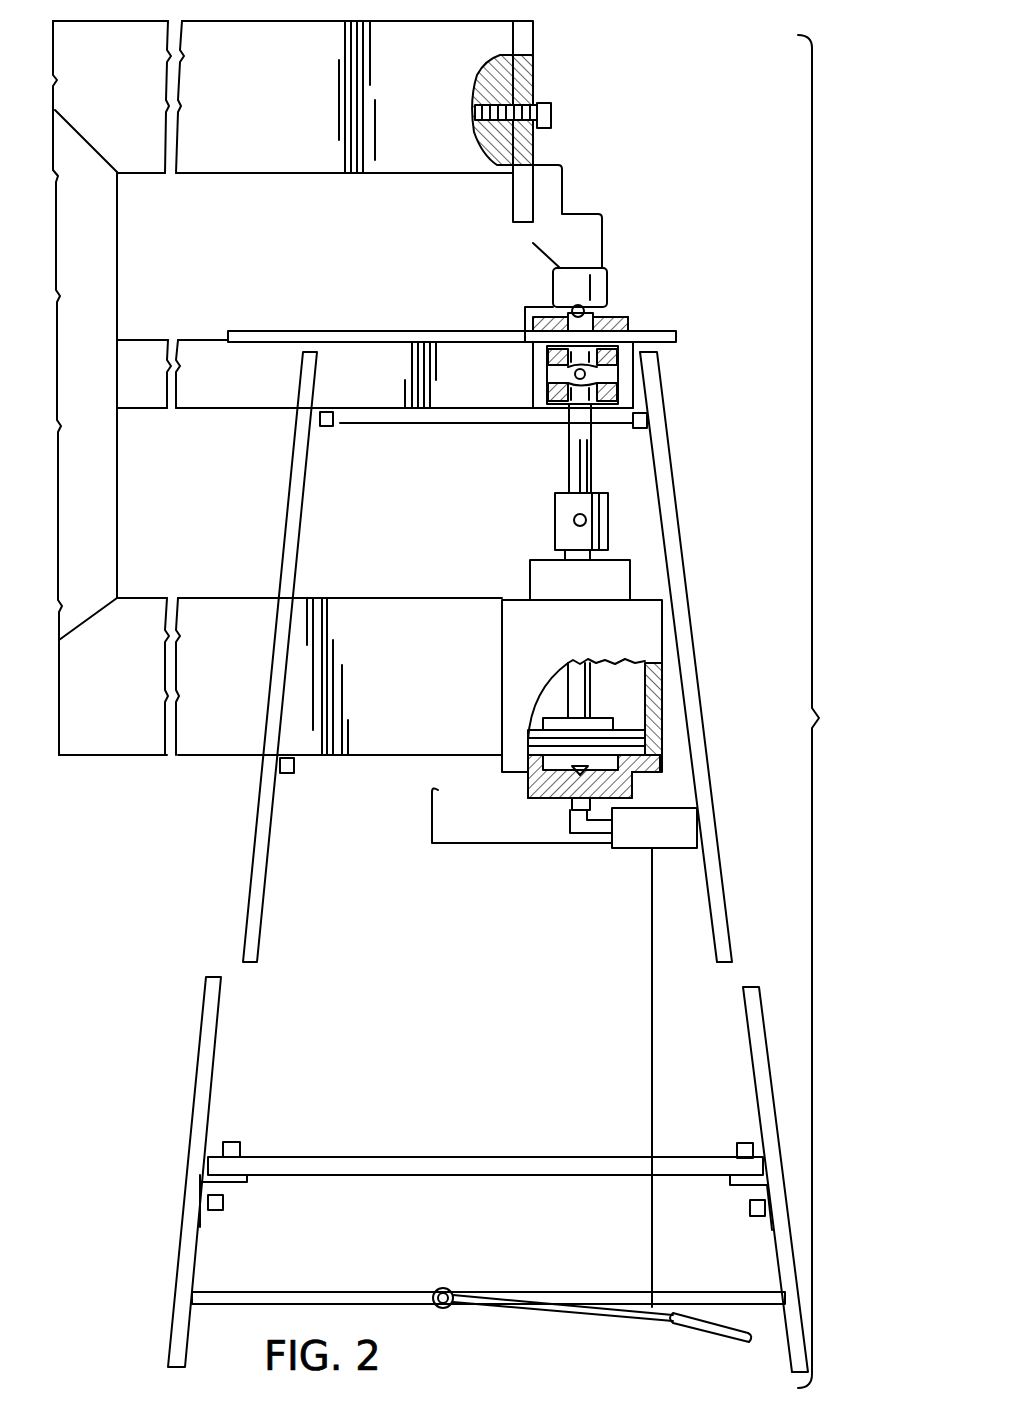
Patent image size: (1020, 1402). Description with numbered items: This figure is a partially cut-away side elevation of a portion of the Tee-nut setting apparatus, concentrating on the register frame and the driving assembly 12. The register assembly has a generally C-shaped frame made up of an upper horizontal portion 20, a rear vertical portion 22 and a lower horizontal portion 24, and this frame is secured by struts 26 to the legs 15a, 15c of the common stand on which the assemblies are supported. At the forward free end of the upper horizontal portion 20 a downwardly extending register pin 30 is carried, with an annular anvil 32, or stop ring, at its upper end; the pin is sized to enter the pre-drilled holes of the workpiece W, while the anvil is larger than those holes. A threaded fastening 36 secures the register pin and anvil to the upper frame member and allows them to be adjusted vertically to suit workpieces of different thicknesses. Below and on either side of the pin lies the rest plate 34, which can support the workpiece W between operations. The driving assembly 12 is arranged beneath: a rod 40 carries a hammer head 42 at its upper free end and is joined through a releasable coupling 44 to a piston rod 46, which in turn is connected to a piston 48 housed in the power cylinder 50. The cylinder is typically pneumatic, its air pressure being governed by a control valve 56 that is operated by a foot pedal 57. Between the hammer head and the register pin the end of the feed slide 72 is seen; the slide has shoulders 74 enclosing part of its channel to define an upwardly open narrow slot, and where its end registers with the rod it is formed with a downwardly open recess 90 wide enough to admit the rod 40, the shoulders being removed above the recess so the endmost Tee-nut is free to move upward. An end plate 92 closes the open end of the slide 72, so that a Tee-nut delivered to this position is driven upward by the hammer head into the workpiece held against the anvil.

The driving assembly 12 is at (623, 489).
The leg 15a is at (685, 568).
The leg 15c is at (288, 559).
The upper horizontal portion 20 is at (290, 152).
The rear vertical portion 22 is at (102, 259).
The lower horizontal portion 24 is at (356, 621).
The strut 26 is at (333, 419).
The register pin 30 is at (590, 309).
The anvil 32 is at (607, 290).
The rest plate 34 is at (377, 331).
The threaded fastening 36 is at (552, 117).
The rod 40 is at (568, 451).
The hammer head 42 is at (547, 364).
The releasable coupling 44 is at (553, 516).
The piston rod 46 is at (528, 558).
The piston 48 is at (625, 745).
The power cylinder 50 is at (518, 669).
The control valve 56 is at (626, 839).
The foot pedal 57 is at (606, 1312).
The feed slide 72 is at (540, 393).
The shoulder 74 is at (630, 316).
The recess 90 is at (617, 374).
The end plate 92 is at (537, 339).
The workpiece W is at (553, 353).